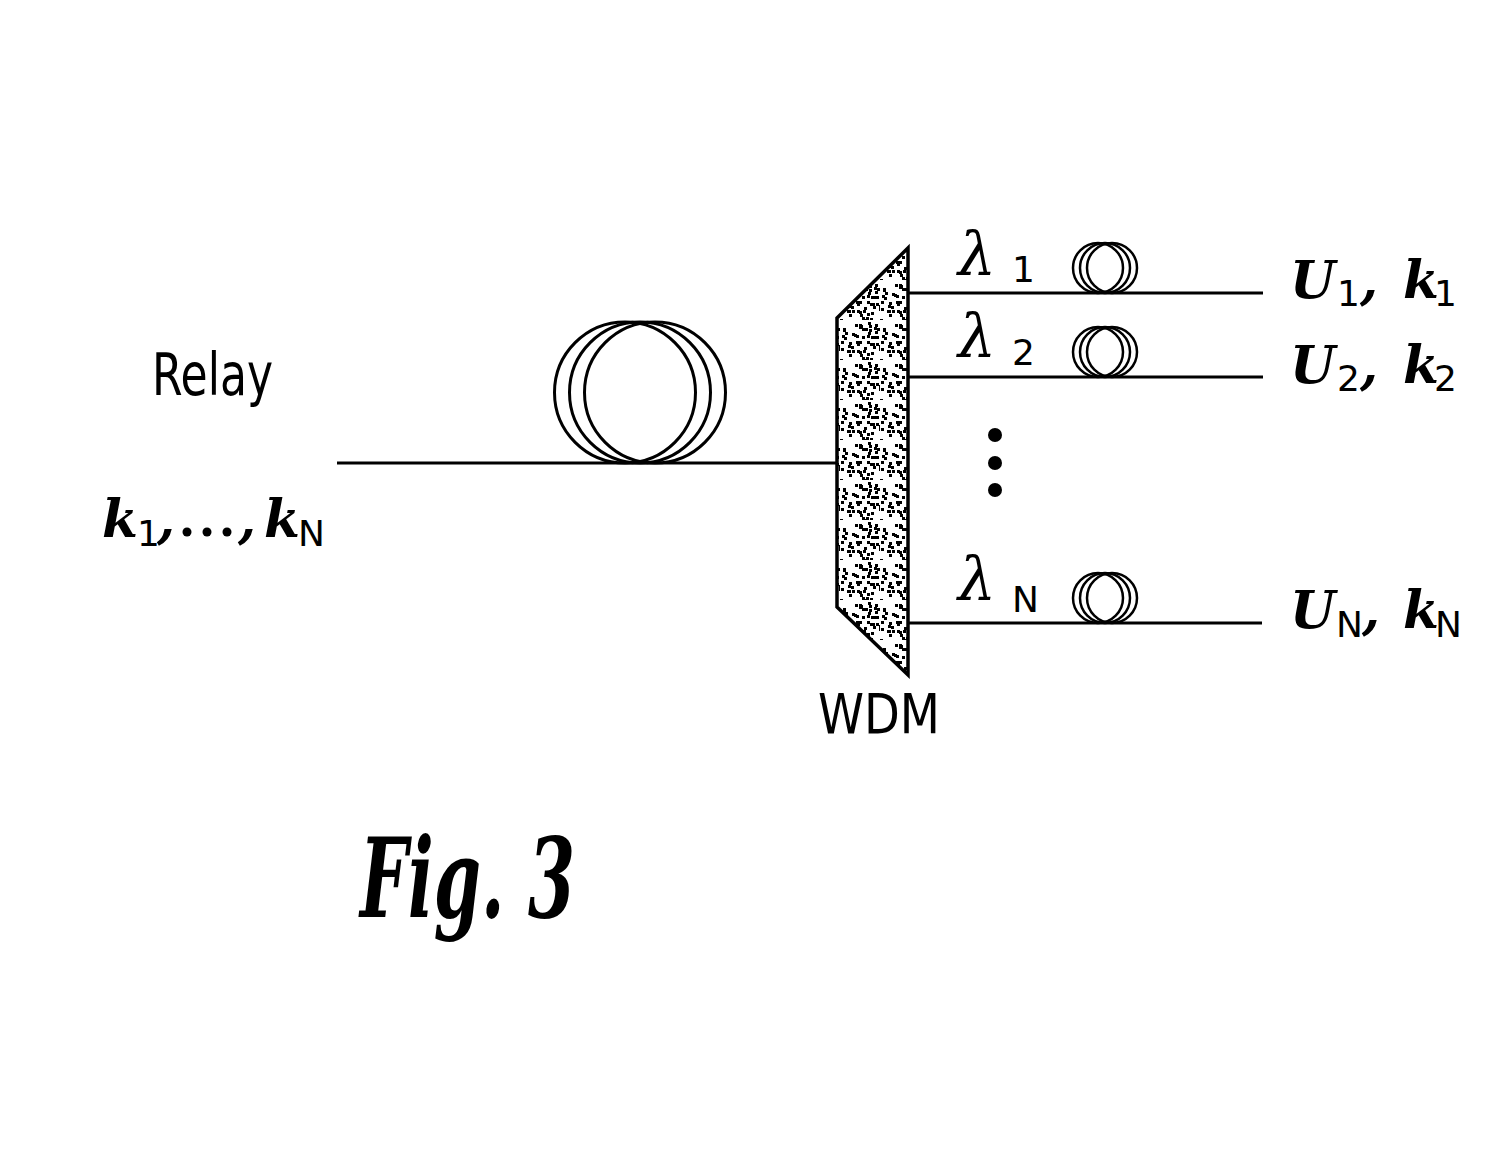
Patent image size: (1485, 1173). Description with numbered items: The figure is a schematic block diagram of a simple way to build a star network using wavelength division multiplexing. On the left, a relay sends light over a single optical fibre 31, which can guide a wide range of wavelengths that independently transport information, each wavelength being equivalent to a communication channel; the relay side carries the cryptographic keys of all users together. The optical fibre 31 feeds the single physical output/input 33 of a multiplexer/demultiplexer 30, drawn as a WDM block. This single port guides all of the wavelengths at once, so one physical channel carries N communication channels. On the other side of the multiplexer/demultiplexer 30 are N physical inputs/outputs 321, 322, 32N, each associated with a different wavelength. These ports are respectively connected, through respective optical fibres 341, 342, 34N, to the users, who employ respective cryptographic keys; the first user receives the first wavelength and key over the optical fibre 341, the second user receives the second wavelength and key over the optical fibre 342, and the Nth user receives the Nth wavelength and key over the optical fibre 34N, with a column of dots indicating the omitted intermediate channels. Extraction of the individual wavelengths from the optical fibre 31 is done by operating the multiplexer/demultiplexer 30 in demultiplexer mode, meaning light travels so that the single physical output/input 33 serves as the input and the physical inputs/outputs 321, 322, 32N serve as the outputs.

The multiplexer/demultiplexer 30 is at (862, 330).
The optical fibre 31 is at (455, 463).
The single physical output/input 33 is at (778, 463).
The physical input/output 321 is at (1050, 293).
The physical input/output 322 is at (933, 377).
The physical input/output 32N is at (945, 623).
The optical fibre 341 is at (1220, 293).
The optical fibre 342 is at (1183, 377).
The optical fibre 34N is at (1200, 623).